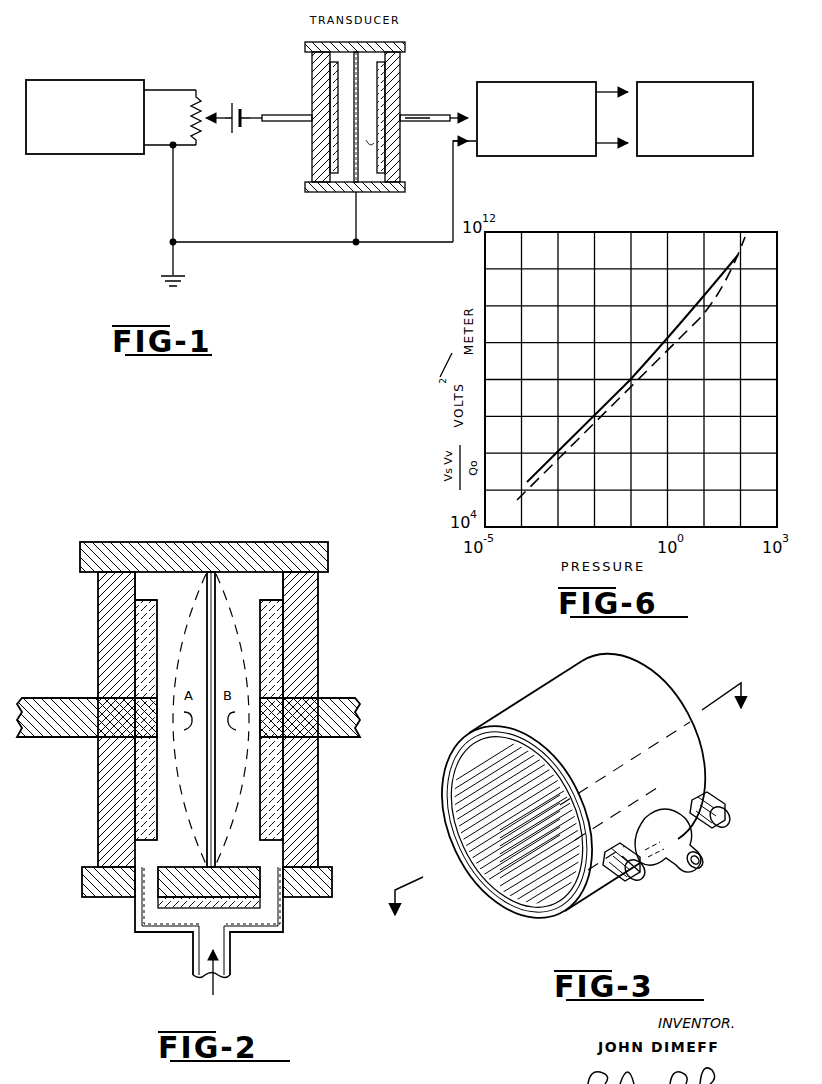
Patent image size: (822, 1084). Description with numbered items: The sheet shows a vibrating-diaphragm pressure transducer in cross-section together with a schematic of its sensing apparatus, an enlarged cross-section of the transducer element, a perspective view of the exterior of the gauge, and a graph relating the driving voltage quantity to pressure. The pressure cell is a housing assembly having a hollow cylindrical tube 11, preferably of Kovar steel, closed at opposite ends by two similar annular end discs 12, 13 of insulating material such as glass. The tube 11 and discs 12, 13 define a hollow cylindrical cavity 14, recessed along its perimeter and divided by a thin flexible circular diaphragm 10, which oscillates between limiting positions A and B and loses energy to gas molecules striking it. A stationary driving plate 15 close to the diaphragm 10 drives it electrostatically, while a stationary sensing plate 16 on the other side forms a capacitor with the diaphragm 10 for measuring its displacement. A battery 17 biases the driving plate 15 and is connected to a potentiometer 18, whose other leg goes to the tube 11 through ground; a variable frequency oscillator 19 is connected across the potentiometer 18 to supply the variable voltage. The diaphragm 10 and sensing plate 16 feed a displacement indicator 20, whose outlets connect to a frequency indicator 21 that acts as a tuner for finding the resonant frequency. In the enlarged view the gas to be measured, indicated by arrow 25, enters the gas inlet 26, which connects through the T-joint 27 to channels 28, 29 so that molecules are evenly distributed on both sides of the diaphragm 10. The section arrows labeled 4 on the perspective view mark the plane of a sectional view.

In FIG. 1, the diaphragm 10 is at (347, 165).
In FIG. 2, the diaphragm 10 is at (209, 600).
In FIG. 1, the cylindrical tube 11 is at (406, 47).
In FIG. 2, the cylindrical tube 11 is at (285, 542).
In FIG. 3, the cylindrical tube 11 is at (690, 748).
In FIG. 1, the annular end disc 12 is at (400, 82).
In FIG. 2, the annular end disc 12 is at (318, 626).
In FIG. 1, the annular end disc 13 is at (312, 83).
In FIG. 2, the annular end disc 13 is at (98, 630).
In FIG. 3, the annular end disc 13 is at (468, 843).
In FIG. 1, the cylindrical cavity 14 is at (366, 144).
In FIG. 2, the cylindrical cavity 14 is at (262, 585).
In FIG. 1, the driving plate 15 is at (332, 152).
In FIG. 2, the driving plate 15 is at (135, 784).
In FIG. 1, the sensing plate 16 is at (383, 168).
In FIG. 2, the sensing plate 16 is at (262, 792).
In FIG. 1, the battery 17 is at (234, 100).
In FIG. 1, the potentiometer 18 is at (203, 140).
In FIG. 1, the variable frequency oscillator 19 is at (108, 156).
In FIG. 1, the displacement indicator 20 is at (548, 82).
In FIG. 1, the frequency indicator 21 is at (700, 82).
In FIG. 2, the arrow 25 is at (216, 985).
In FIG. 2, the gas inlet 26 is at (232, 960).
In FIG. 2, the T-joint 27 is at (185, 940).
In FIG. 2, the channel 28 is at (142, 915).
In FIG. 2, the channel 29 is at (270, 917).
In FIG. 3, the section line 4- 4 is at (568, 799).